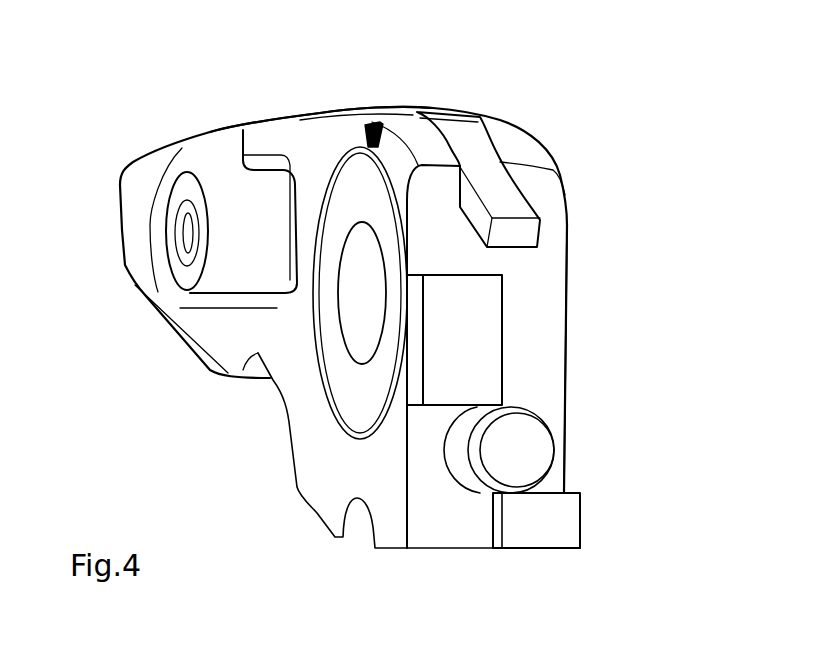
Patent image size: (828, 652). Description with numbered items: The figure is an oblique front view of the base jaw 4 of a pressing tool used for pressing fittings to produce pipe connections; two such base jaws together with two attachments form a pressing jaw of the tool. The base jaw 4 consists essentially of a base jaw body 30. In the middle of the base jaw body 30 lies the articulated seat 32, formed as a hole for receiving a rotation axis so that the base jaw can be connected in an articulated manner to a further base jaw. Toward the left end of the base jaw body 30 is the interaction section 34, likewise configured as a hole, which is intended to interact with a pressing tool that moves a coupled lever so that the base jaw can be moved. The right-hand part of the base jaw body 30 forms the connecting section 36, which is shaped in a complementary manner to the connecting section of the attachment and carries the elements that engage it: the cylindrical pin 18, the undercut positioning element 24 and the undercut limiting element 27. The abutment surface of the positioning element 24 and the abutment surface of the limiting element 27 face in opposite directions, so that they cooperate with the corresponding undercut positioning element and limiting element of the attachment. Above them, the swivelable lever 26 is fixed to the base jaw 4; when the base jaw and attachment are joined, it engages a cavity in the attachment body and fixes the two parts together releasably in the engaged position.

The base jaw 4 is at (172, 77).
The base jaw body 30 is at (313, 143).
The swivelable lever 26 is at (505, 193).
The connecting section 36 is at (590, 247).
The positioning element 24 is at (478, 340).
The cylindrical pin 18 is at (535, 448).
The limiting element 27 is at (563, 525).
The interaction section 34 is at (185, 235).
The articulated seat 32 is at (362, 312).